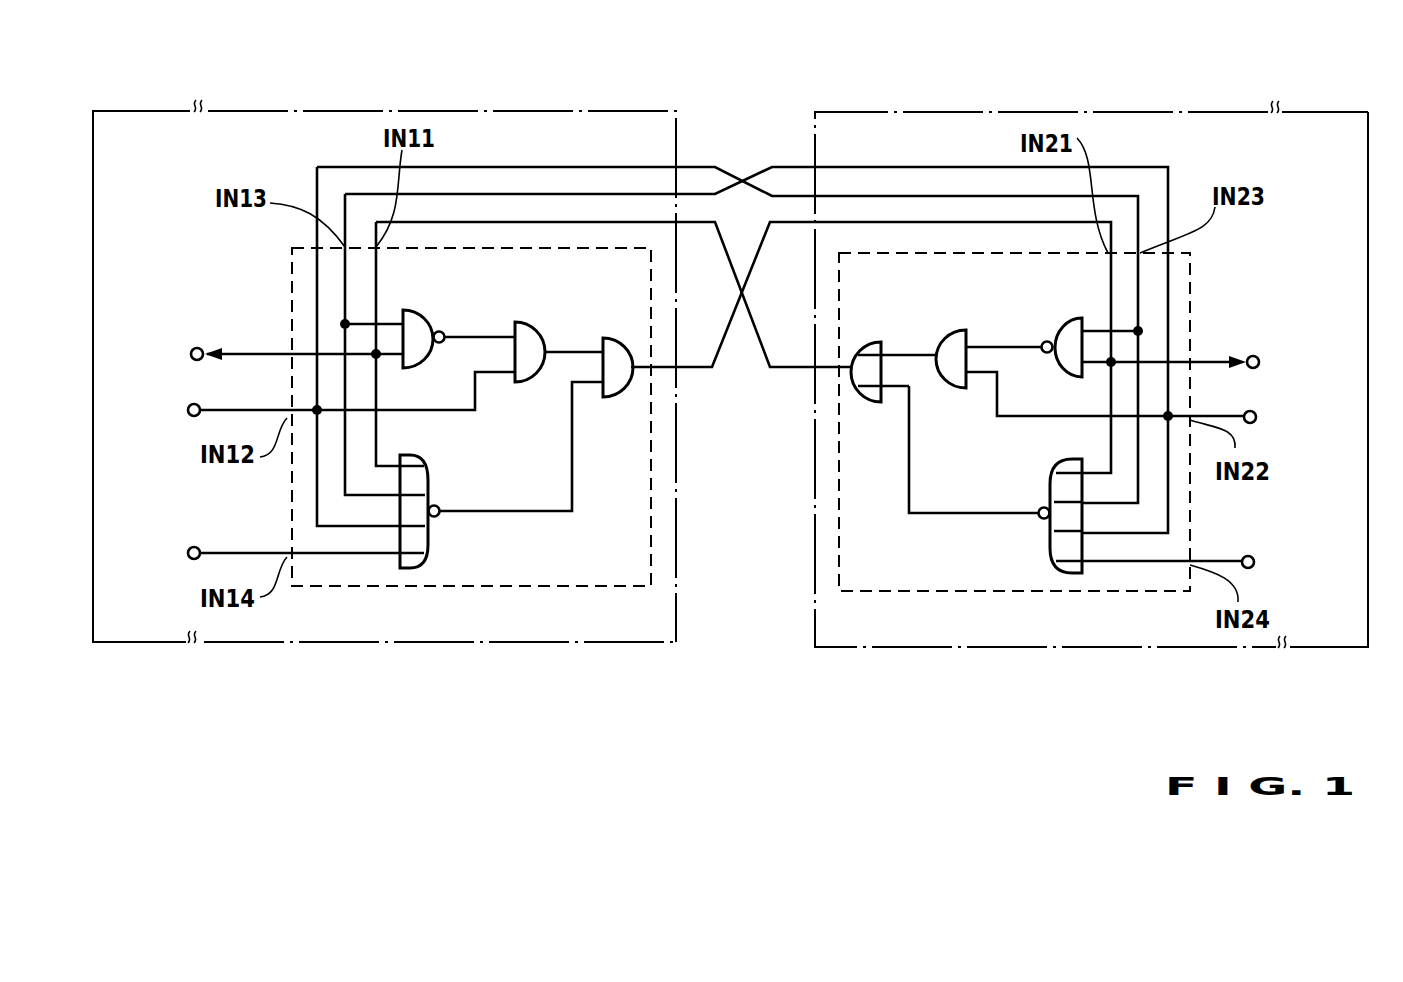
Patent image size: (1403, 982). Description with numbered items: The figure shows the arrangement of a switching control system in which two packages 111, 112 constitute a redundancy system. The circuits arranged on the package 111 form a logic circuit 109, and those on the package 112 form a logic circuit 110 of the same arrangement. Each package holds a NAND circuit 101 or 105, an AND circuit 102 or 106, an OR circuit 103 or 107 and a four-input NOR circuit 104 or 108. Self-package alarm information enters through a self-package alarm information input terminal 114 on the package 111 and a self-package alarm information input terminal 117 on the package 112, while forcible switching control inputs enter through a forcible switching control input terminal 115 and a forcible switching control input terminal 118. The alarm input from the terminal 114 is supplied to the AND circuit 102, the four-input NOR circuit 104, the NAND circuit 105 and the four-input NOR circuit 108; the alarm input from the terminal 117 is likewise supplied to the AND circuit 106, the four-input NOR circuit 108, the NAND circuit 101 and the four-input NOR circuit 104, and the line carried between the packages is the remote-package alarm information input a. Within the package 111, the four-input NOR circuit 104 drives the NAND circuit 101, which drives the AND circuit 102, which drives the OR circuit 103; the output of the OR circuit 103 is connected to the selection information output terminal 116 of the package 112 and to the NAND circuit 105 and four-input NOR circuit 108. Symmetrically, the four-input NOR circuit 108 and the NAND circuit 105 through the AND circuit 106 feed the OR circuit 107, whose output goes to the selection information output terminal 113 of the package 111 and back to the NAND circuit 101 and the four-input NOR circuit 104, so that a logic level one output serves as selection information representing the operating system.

The NAND circuit 101 is at (432, 310).
The AND circuit 102 is at (527, 322).
The OR circuit 103 is at (618, 338).
The four-input NOR circuit 104 is at (430, 476).
The NAND circuit 105 is at (1058, 318).
The AND circuit 106 is at (954, 330).
The OR circuit 107 is at (868, 342).
The four-input NOR circuit 108 is at (1050, 490).
The logic circuit 109 is at (292, 282).
The logic circuit 110 is at (1192, 285).
The package 111 is at (315, 110).
The package 112 is at (972, 112).
The selection information output terminal 113 is at (190, 355).
The self-package alarm information input terminal 114 is at (188, 411).
The forcible switching control input terminal 115 is at (188, 554).
The selection information output terminal 116 is at (1262, 364).
The self-package alarm information input terminal 117 is at (1260, 419).
The forcible switching control input terminal 118 is at (1258, 564).
The remote-package alarm information input a is at (565, 190).